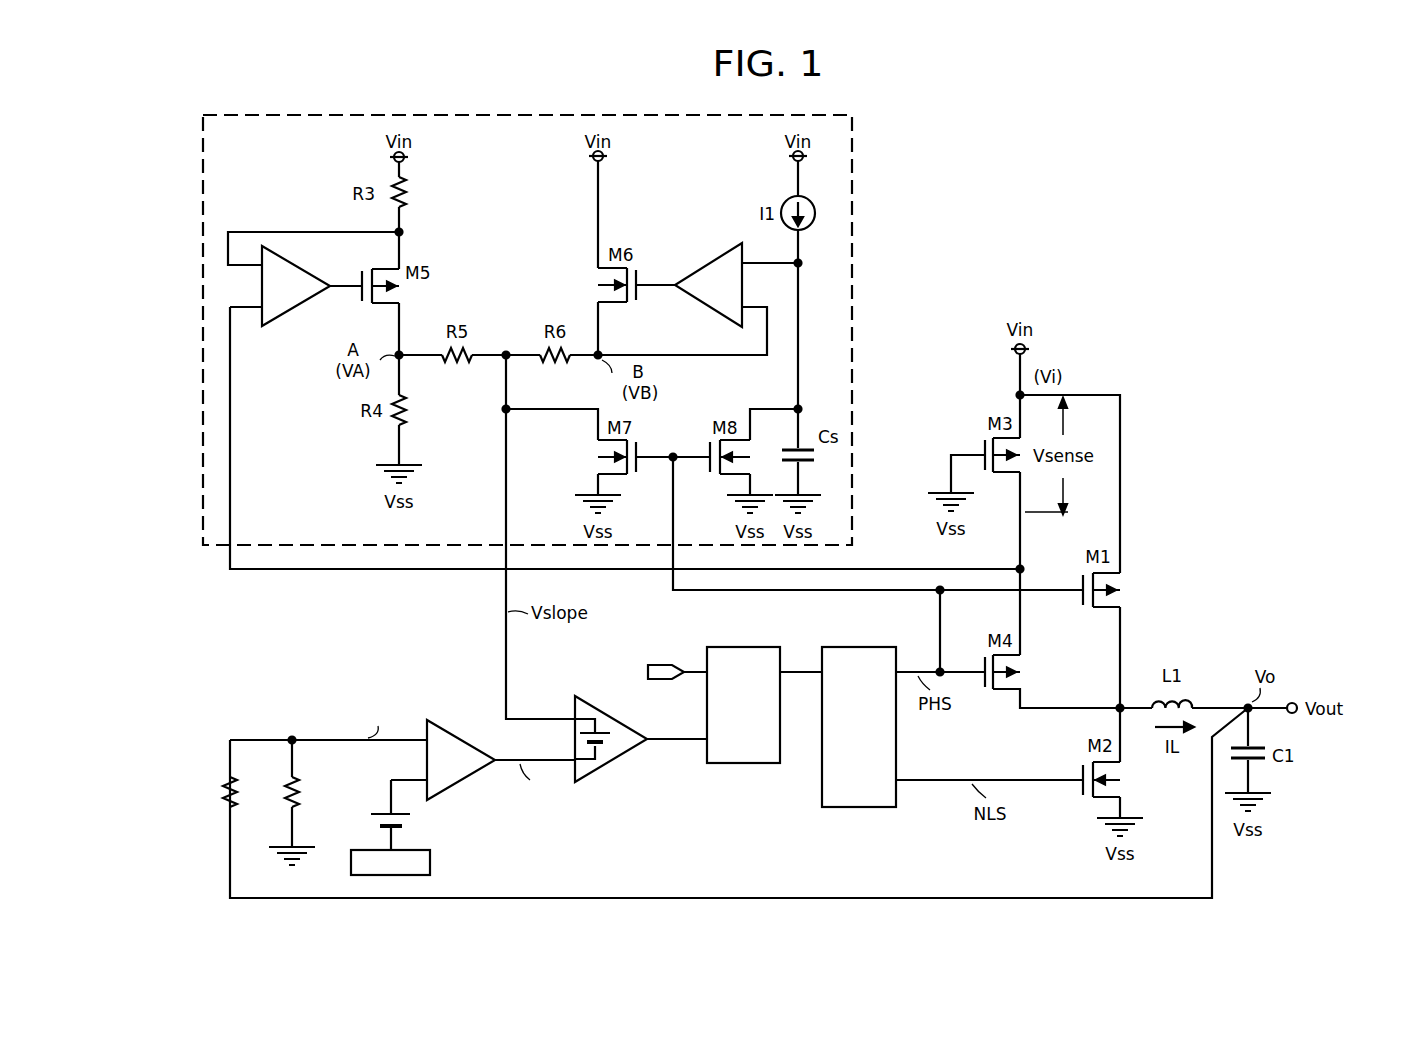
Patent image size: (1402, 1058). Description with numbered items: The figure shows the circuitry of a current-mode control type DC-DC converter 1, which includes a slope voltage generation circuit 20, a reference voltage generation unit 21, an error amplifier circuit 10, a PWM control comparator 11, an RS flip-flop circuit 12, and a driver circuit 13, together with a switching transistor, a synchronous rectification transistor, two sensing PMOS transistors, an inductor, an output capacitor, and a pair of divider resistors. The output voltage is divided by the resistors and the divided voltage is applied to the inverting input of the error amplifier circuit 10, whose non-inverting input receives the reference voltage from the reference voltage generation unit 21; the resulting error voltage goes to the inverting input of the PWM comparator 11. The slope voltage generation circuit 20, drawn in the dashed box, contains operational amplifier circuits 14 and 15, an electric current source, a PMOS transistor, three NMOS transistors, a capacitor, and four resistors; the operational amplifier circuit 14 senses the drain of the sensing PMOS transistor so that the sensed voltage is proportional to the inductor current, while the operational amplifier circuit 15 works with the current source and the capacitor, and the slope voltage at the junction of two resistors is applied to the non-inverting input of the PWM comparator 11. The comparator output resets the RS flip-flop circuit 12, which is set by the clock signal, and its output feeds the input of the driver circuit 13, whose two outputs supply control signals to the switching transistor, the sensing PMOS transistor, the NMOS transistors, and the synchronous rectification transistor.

The current-mode control type DC-DC converter 1 is at (1098, 172).
The error amplifier circuit 10 is at (460, 728).
The PWM control comparator 11 is at (612, 768).
The RS flip-flop circuit 12 is at (752, 646).
The driver circuit 13 is at (866, 646).
The operational amplifier circuit 14 is at (300, 310).
The operational amplifier circuit 15 is at (712, 264).
The slope voltage generation circuit 20 is at (852, 238).
The reference voltage generation unit 21 is at (430, 862).